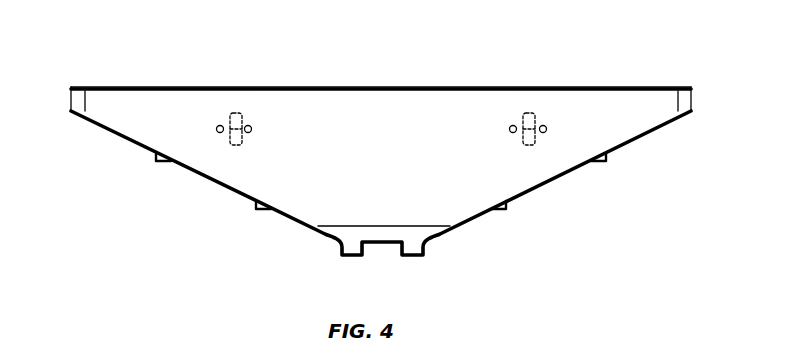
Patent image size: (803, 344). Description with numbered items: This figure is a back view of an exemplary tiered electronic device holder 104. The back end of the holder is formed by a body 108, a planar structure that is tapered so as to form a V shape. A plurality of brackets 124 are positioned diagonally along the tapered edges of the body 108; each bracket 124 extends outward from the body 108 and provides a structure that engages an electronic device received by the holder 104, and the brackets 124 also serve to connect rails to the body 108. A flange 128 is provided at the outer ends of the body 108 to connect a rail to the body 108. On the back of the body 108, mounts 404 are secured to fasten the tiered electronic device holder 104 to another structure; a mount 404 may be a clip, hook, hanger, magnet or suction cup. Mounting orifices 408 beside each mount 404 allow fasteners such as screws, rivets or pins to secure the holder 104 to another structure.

The tiered electronic device holder 104 is at (382, 52).
The body 108 is at (402, 146).
The bracket 124 is at (163, 162).
The flange 128 is at (71, 101).
The mount 404 is at (236, 113).
The mounting orifice 408 is at (220, 124).